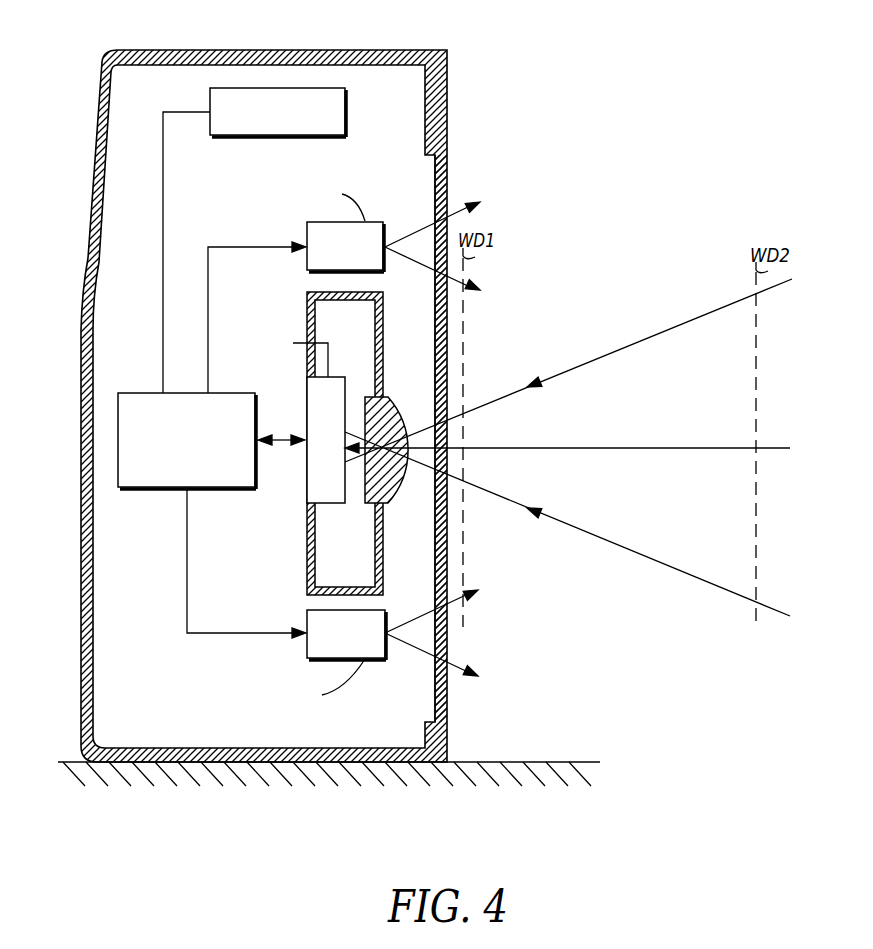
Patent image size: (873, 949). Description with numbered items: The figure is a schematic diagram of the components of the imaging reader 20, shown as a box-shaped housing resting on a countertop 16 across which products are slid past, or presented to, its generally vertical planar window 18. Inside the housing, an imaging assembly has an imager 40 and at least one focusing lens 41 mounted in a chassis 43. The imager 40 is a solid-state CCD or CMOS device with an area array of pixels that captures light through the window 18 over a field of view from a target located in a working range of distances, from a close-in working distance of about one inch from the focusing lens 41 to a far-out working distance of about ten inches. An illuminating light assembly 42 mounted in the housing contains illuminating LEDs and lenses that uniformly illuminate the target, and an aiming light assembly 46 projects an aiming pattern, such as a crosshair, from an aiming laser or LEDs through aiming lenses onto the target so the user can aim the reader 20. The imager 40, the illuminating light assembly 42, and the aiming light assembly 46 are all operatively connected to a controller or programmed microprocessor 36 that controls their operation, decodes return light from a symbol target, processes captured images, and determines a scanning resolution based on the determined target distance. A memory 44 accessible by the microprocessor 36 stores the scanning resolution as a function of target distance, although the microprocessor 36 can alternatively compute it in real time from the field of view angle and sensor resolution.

The imaging reader 20 is at (441, 44).
The window 18 is at (448, 162).
The countertop 16 is at (541, 761).
The memory 44 is at (346, 113).
The illuminating light assembly 42 is at (307, 258).
The chassis 43 is at (384, 326).
The imager 40 is at (310, 473).
The focusing lens 41 is at (388, 421).
The microprocessor 36 is at (186, 392).
The aiming light assembly 46 is at (312, 622).